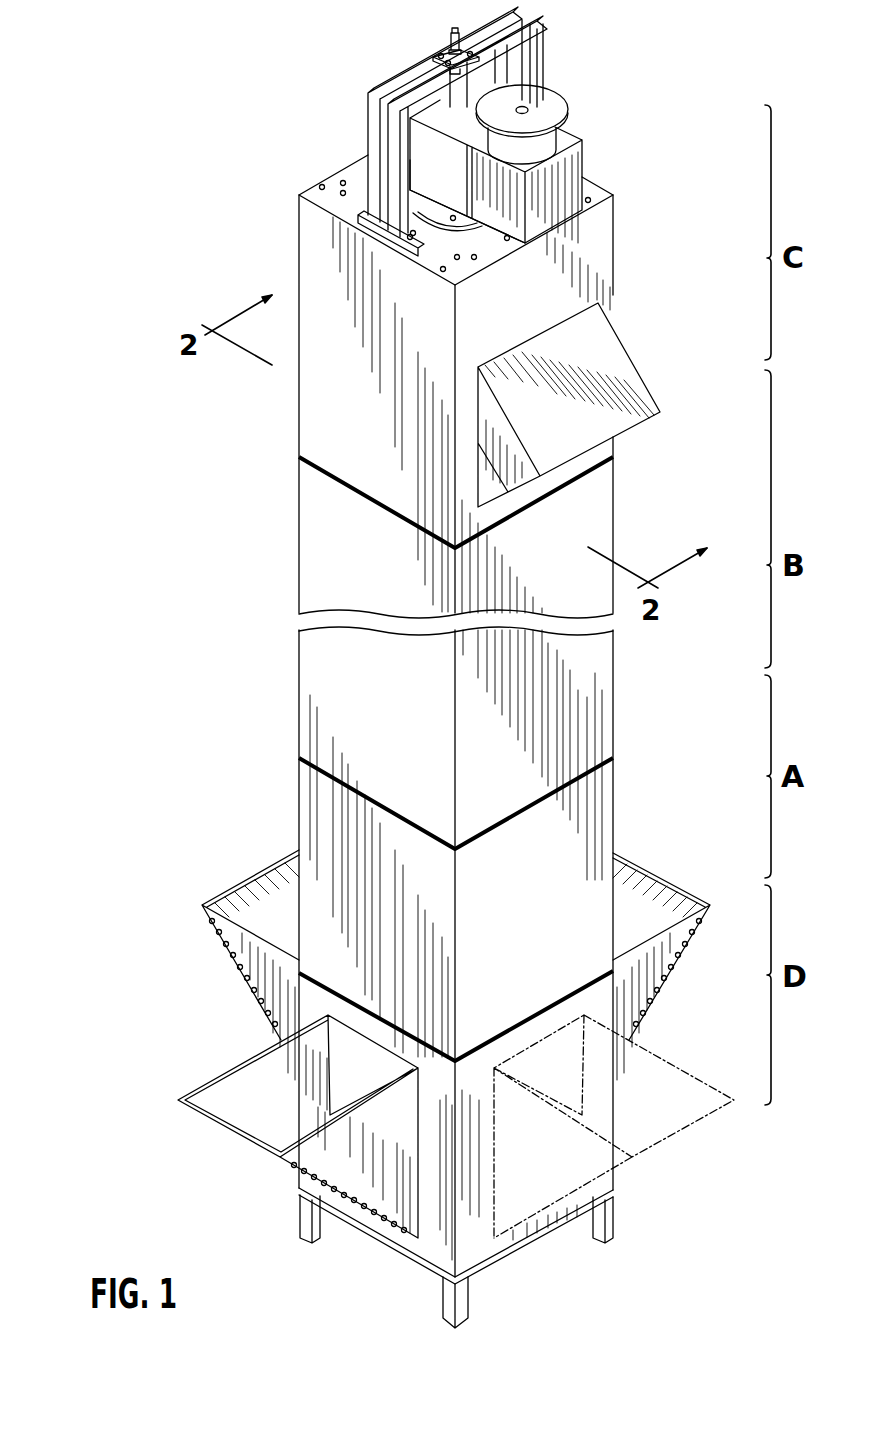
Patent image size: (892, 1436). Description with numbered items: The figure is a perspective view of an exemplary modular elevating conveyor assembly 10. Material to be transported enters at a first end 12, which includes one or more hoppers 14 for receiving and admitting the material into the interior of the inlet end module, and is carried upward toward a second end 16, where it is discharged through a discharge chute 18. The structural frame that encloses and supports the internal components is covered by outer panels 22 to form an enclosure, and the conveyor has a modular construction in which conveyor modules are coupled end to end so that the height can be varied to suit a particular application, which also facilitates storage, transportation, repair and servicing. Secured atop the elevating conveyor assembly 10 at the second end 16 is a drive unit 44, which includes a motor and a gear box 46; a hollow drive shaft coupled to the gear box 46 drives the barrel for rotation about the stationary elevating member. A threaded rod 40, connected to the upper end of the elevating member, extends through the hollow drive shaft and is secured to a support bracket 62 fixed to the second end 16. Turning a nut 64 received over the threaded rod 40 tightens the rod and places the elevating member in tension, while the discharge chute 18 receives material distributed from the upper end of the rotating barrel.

The elevating conveyor assembly 10 is at (232, 86).
The first end 12 is at (528, 1242).
The hopper 14 is at (228, 885).
The second end 16 is at (335, 178).
The discharge chute 18 is at (627, 357).
The outer panels 22 is at (458, 738).
The threaded rod 40 is at (451, 37).
The drive unit 44 is at (581, 136).
The gear box 46 is at (443, 182).
The support bracket 62 is at (367, 118).
The nut 64 is at (435, 55).